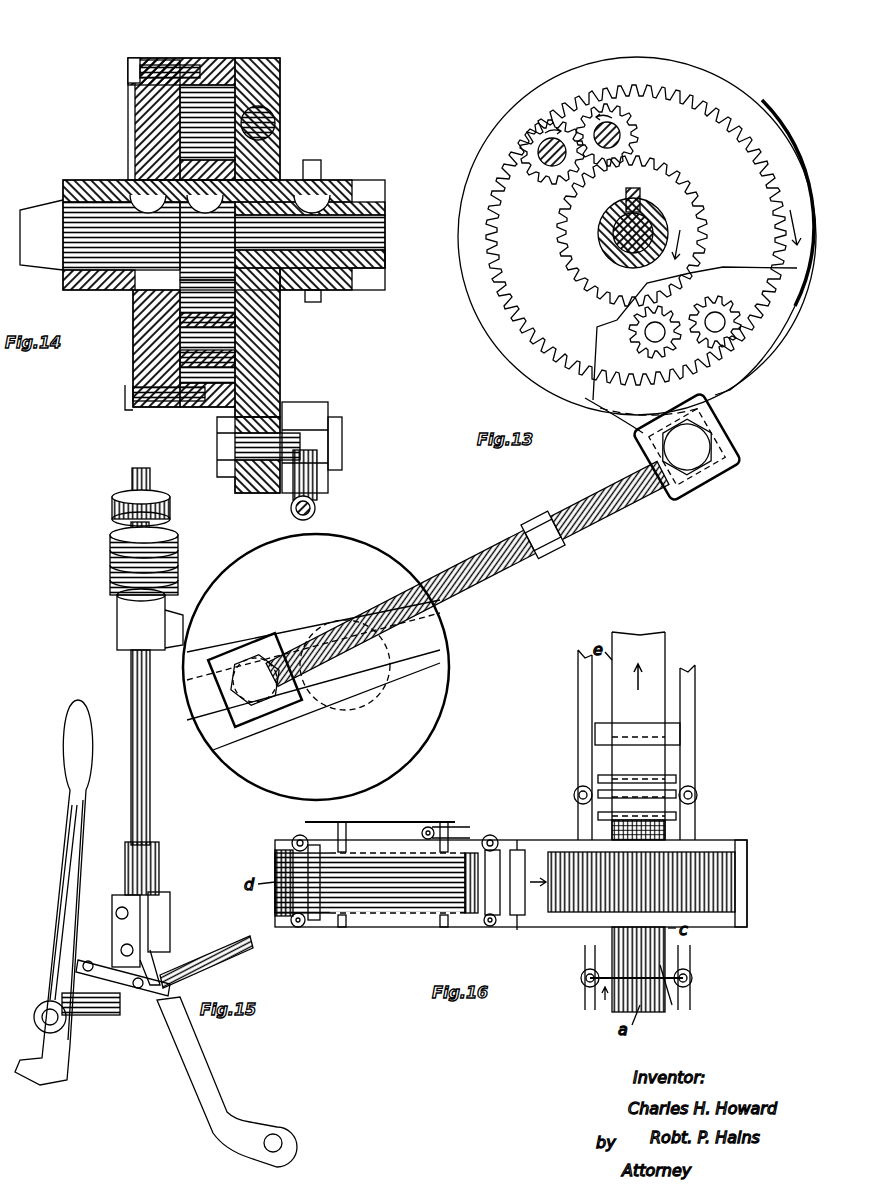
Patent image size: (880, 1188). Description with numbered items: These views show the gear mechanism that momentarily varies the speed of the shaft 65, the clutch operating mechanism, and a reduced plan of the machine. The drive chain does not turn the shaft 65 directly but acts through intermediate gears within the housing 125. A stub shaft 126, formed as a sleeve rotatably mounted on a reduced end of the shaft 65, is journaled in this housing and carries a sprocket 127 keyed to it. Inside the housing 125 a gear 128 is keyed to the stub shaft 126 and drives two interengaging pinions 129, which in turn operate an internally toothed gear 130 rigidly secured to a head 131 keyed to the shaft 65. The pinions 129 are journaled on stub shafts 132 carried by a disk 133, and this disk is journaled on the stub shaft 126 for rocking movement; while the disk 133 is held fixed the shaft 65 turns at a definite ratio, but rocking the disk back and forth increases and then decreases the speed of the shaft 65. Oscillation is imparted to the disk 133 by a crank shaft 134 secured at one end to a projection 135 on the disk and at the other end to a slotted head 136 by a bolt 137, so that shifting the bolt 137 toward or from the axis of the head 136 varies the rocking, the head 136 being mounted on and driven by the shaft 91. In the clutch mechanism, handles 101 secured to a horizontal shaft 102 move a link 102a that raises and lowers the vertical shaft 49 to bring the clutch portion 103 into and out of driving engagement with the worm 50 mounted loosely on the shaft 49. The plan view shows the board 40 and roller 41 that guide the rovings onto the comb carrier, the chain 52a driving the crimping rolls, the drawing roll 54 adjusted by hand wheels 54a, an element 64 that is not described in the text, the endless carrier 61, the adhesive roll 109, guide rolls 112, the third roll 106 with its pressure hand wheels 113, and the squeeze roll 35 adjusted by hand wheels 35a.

In FIG. 14, the housing 125 is at (200, 58).
In FIG. 13, the housing 125 is at (630, 58).
In FIG. 14, the stub shaft 126 is at (355, 278).
In FIG. 13, the stub shaft 126 is at (660, 205).
In FIG. 14, the sprocket 127 is at (322, 297).
In FIG. 14, the gear 128 is at (230, 297).
In FIG. 13, the gear 128 is at (568, 272).
In FIG. 14, the pinions 129 is at (190, 108).
In FIG. 13, the pinions 129 is at (598, 108).
In FIG. 14, the internally toothed gear 130 is at (225, 60).
In FIG. 13, the internally toothed gear 130 is at (712, 102).
In FIG. 14, the head 131 is at (133, 352).
In FIG. 14, the stub shaft 132 is at (267, 338).
In FIG. 13, the stub shaft 132 is at (645, 332).
In FIG. 14, the disk 133 is at (267, 377).
In FIG. 14, the crank shaft 134 is at (315, 505).
In FIG. 13, the crank shaft 134 is at (500, 582).
In FIG. 14, the projection 135 is at (342, 445).
In FIG. 13, the projection 135 is at (700, 478).
In FIG. 13, the slotted head 136 is at (430, 720).
In FIG. 13, the bolt 137 is at (282, 716).
In FIG. 13, the shaft 91 is at (355, 712).
In FIG. 14, the shaft 65 is at (95, 202).
In FIG. 13, the shaft 65 is at (640, 200).
In FIG. 15, the vertical shaft 49 is at (150, 475).
In FIG. 16, the vertical shaft 49 is at (432, 826).
In FIG. 15, the worm 50 is at (110, 568).
In FIG. 15, the clutch portion 103 is at (112, 510).
In FIG. 15, the handles 101 is at (64, 798).
In FIG. 15, the horizontal shaft 102 is at (222, 930).
In FIG. 15, the link 102a is at (170, 912).
In FIG. 16, the board 40 is at (292, 848).
In FIG. 16, the roller 41 is at (315, 855).
In FIG. 16, the chain 52a is at (380, 822).
In FIG. 16, the drawing roll 54 is at (490, 850).
In FIG. 16, the hand wheels 54a is at (485, 935).
In FIG. 16, the guide plate 64 is at (518, 848).
In FIG. 16, the endless carrier 61 is at (685, 915).
In FIG. 16, the roll 109 is at (665, 728).
In FIG. 16, the guide rolls 112 is at (670, 777).
In FIG. 16, the third roll 106 is at (668, 790).
In FIG. 16, the hand wheels 113 is at (574, 793).
In FIG. 16, the squeeze roll 35 is at (668, 1000).
In FIG. 16, the hand wheels 35a is at (693, 978).